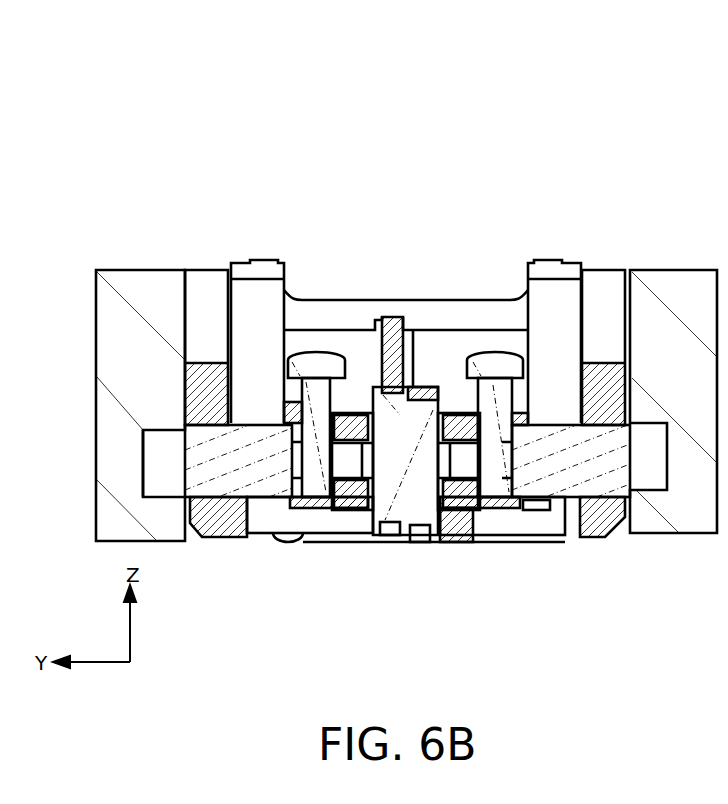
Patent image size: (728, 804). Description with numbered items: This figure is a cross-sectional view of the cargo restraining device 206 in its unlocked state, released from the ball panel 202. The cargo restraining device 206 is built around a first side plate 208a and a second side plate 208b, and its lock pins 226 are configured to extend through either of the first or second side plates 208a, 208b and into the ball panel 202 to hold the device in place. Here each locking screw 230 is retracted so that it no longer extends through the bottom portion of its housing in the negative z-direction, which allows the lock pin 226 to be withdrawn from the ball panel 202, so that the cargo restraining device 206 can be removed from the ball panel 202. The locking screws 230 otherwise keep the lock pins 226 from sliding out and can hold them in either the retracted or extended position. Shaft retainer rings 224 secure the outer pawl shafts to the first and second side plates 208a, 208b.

The ball panel 202 is at (100, 387).
The cargo restraining device 206 is at (306, 136).
The first side plate 208a is at (592, 380).
The second side plate 208b is at (198, 372).
The shaft retainer ring 224 is at (136, 470).
The lock pin 226 is at (190, 448).
The locking screw 230 is at (320, 495).